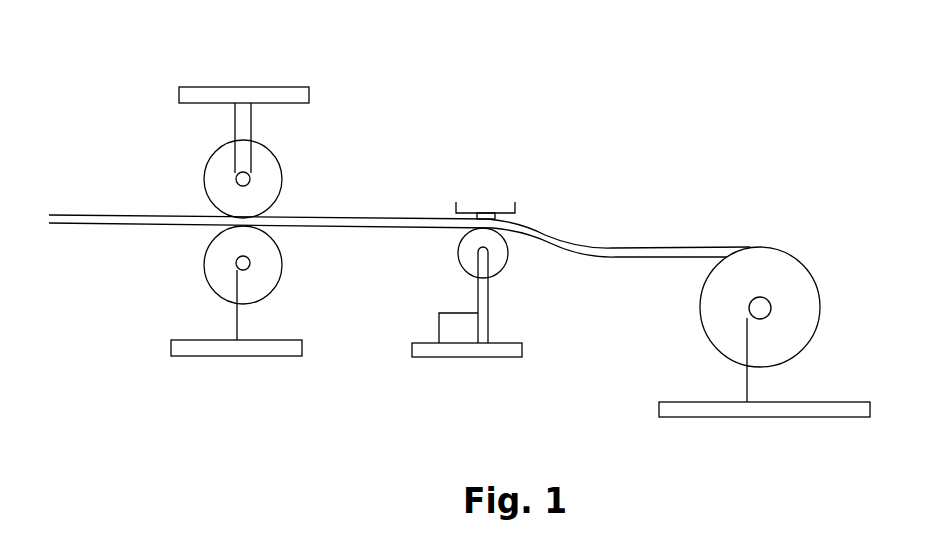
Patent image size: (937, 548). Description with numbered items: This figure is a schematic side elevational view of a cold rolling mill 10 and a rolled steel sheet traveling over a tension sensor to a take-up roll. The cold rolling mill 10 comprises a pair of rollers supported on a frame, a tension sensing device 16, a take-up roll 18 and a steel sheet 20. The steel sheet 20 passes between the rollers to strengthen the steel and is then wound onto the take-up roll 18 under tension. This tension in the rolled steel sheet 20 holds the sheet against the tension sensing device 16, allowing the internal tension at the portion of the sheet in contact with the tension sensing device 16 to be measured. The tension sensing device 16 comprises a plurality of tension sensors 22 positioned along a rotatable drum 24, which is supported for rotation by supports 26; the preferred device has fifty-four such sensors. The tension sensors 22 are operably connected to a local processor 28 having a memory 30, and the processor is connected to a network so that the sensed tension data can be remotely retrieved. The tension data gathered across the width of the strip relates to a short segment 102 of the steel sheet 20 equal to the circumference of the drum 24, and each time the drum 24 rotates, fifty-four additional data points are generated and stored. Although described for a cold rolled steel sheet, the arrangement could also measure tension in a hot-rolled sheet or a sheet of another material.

The cold rolling mill 10 is at (388, 88).
The tension sensing device 16 is at (533, 305).
The take-up roll 18 is at (797, 238).
The steel sheet 20 is at (410, 210).
The tension sensors 22 is at (473, 228).
The rotatable drum 24 is at (460, 265).
The supports 26 is at (422, 353).
The local processor 28 is at (463, 330).
The memory 30 is at (440, 343).
The short segment 102 is at (495, 220).